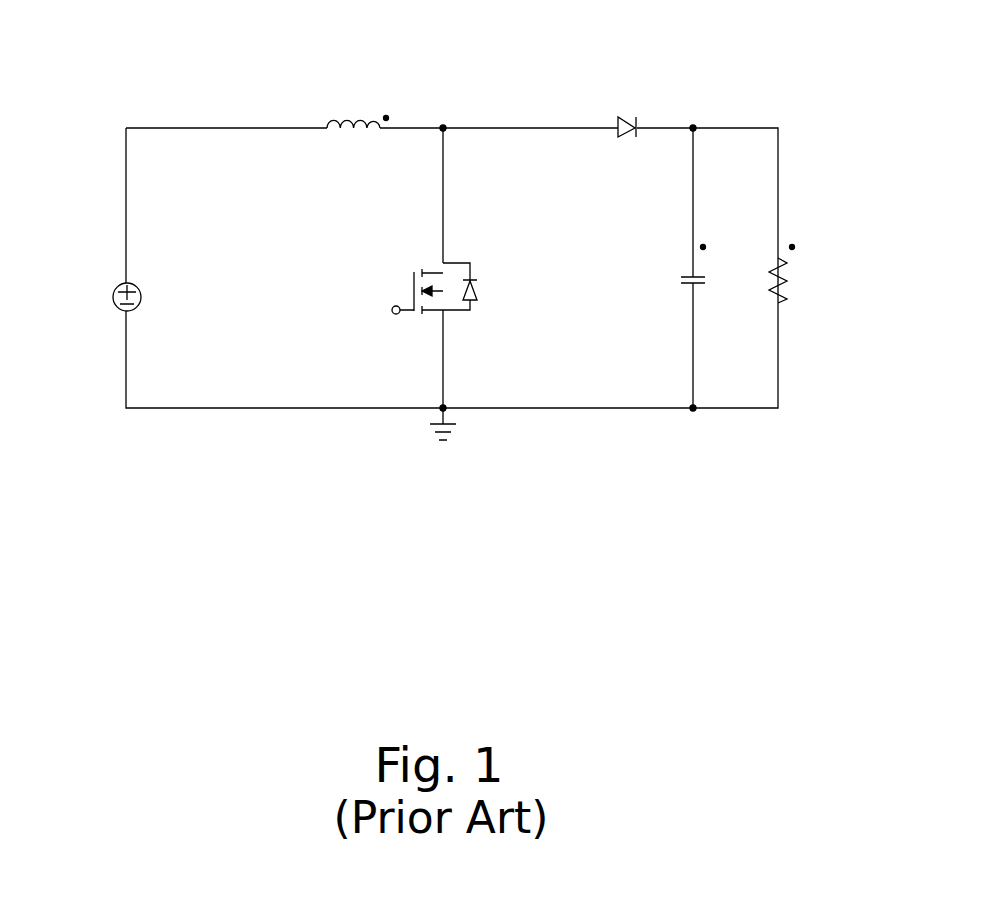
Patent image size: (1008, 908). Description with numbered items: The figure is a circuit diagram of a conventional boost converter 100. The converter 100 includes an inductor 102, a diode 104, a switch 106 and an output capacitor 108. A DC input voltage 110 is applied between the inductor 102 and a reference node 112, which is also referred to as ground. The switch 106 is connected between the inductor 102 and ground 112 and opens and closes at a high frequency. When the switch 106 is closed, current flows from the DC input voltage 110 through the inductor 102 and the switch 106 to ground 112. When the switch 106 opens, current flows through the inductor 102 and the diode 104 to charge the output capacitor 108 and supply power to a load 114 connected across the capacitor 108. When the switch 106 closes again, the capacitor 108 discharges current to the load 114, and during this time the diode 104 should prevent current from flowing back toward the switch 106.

The boost converter 100 is at (178, 72).
The inductor 102 is at (348, 121).
The diode 104 is at (626, 116).
The switch 106 is at (432, 315).
The output capacitor 108 is at (687, 285).
The DC input voltage 110 is at (113, 297).
The reference node 112 is at (444, 442).
The load 114 is at (787, 279).